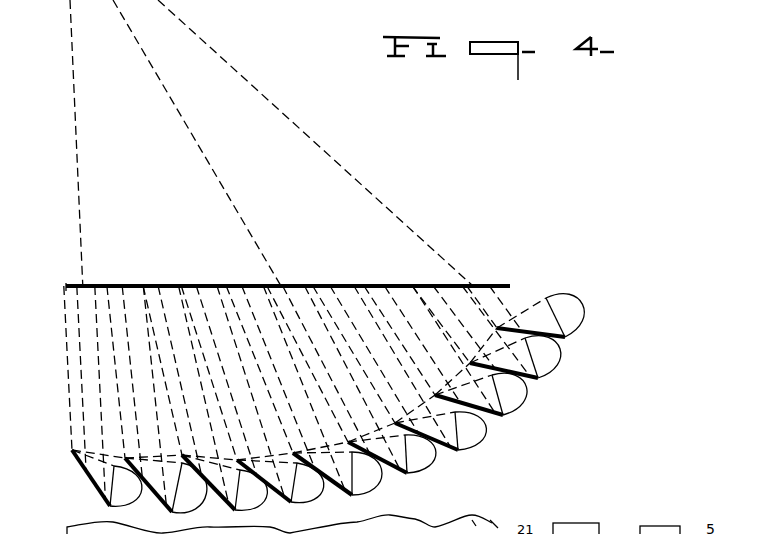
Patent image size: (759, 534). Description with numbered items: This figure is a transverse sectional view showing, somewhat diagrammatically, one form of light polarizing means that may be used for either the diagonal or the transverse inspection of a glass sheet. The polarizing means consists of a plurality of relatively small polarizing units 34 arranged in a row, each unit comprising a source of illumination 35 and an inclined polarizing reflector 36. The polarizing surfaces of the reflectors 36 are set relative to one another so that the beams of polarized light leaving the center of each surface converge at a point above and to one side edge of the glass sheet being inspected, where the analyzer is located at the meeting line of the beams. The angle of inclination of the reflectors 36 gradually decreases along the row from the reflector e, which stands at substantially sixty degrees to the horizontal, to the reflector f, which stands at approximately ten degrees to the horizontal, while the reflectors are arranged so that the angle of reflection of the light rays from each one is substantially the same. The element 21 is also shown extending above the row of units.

The reflector bar 21 is at (362, 285).
The reflector e is at (62, 463).
The reflector f is at (516, 322).
The polarizing unit 34 is at (495, 440).
The source of illumination 35 is at (422, 470).
The polarizing reflector 36 is at (320, 497).